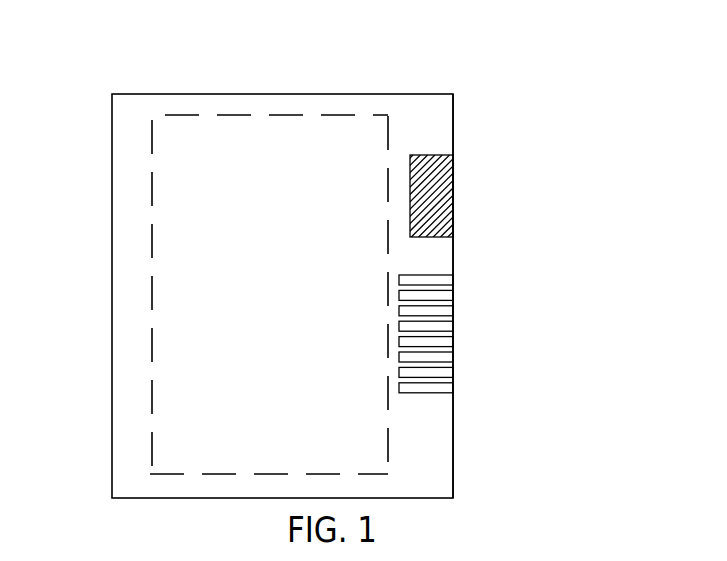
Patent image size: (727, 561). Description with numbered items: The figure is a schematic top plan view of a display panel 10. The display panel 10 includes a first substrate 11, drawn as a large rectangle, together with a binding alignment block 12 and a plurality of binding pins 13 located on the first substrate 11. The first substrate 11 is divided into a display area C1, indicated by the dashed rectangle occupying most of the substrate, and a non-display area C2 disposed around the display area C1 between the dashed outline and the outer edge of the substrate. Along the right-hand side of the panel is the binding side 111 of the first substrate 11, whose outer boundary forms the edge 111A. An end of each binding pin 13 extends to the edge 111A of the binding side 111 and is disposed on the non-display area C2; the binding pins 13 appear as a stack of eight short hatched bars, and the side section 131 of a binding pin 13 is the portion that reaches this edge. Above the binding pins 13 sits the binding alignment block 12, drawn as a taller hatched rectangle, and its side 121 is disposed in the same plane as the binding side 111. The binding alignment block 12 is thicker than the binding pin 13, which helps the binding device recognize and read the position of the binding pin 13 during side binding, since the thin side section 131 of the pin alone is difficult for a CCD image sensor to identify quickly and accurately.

The display panel 10 is at (113, 34).
The first substrate 11 is at (410, 115).
The binding side 111 is at (540, 296).
The edge 111A is at (454, 128).
The binding alignment block 12 is at (435, 194).
The side 121 is at (452, 218).
The binding pins 13 is at (466, 319).
The side section 131 is at (449, 314).
The display area C1 is at (152, 297).
The non-display area C2 is at (212, 289).